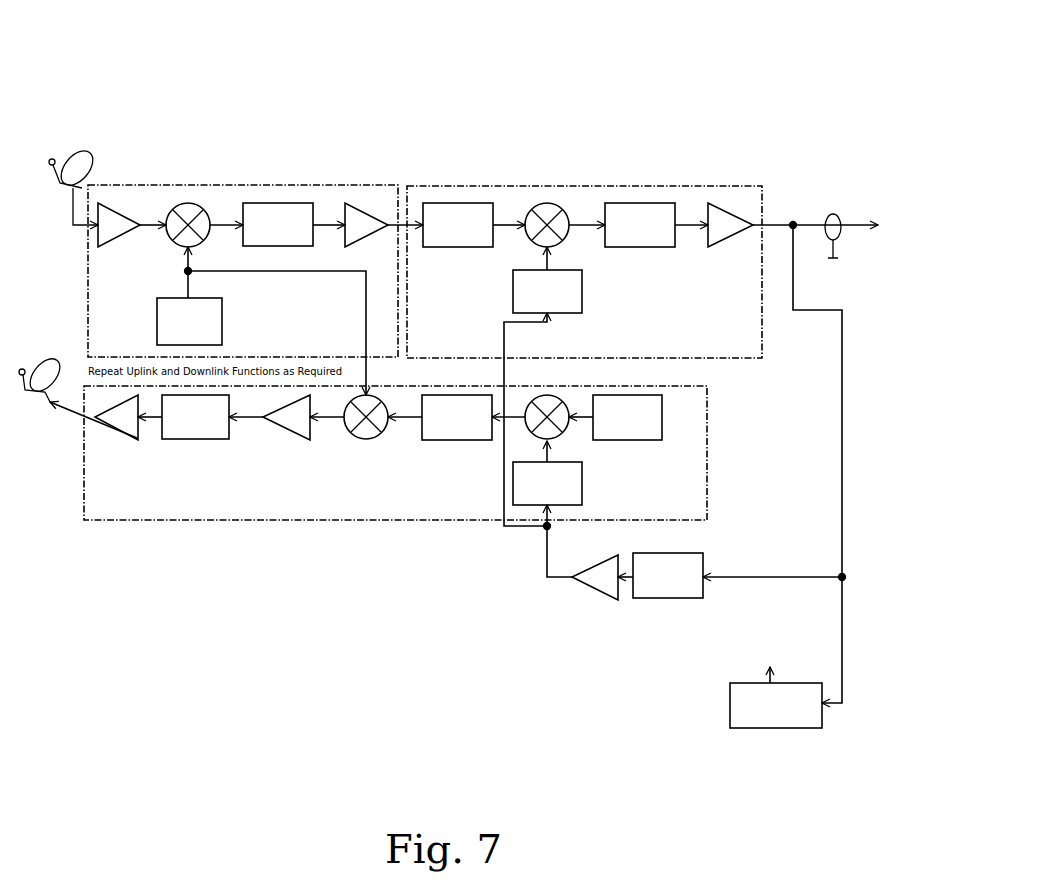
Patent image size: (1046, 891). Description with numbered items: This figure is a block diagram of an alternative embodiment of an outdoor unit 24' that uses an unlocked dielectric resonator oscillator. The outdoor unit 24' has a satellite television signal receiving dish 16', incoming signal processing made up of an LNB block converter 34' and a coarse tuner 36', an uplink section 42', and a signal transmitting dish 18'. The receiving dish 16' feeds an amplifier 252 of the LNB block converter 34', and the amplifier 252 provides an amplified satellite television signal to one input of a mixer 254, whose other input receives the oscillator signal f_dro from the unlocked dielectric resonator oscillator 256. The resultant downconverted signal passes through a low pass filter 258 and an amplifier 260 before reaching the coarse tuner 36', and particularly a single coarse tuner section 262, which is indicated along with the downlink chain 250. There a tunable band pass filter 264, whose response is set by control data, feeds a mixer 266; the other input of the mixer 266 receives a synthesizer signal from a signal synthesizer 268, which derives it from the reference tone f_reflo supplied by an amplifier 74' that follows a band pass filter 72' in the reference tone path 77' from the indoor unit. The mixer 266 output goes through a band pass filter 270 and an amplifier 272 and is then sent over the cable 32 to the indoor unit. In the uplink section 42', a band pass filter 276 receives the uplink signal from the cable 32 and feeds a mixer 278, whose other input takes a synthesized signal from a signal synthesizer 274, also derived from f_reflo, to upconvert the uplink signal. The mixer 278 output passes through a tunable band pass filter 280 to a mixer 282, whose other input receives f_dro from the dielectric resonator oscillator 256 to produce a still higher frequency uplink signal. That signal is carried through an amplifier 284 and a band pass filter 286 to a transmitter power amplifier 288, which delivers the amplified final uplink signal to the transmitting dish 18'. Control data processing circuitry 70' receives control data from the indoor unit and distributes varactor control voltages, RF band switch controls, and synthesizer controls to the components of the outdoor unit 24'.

The satellite television signal receiving dish 16' is at (93, 161).
The signal transmitting dish 18' is at (42, 357).
The outdoor unit 24' is at (592, 54).
The cable 32 is at (852, 218).
The LNB block converter 34' is at (243, 247).
The coarse tuner 36' is at (584, 246).
The uplink section 42' is at (422, 453).
The control data processing circuitry/logic 70' is at (794, 700).
The band pass filter 72' is at (668, 603).
The amplifier 74' is at (590, 593).
The reference tone signal f_reflo 77' is at (546, 455).
The downlink converter chain 250 is at (147, 268).
The amplifier 252 is at (110, 230).
The mixer 254 is at (203, 230).
The unlocked dielectric resonator oscillator 256 is at (167, 315).
The low pass filter 258 is at (273, 240).
The amplifier 260 is at (360, 230).
The coarse tuner section 262 is at (473, 280).
The tunable band pass filter 264 is at (432, 237).
The mixer 266 is at (568, 232).
The signal synthesizer 268 is at (582, 295).
The band pass filter 270 is at (647, 243).
The amplifier 272 is at (718, 235).
The signal synthesizer 274 is at (582, 483).
The band pass filter 276 is at (615, 432).
The mixer 278 is at (550, 433).
The tunable band pass filter 280 is at (430, 432).
The mixer 282 is at (360, 440).
The amplifier 284 is at (285, 418).
The band pass filter 286 is at (183, 432).
The transmitter power amplifier 288 is at (125, 415).